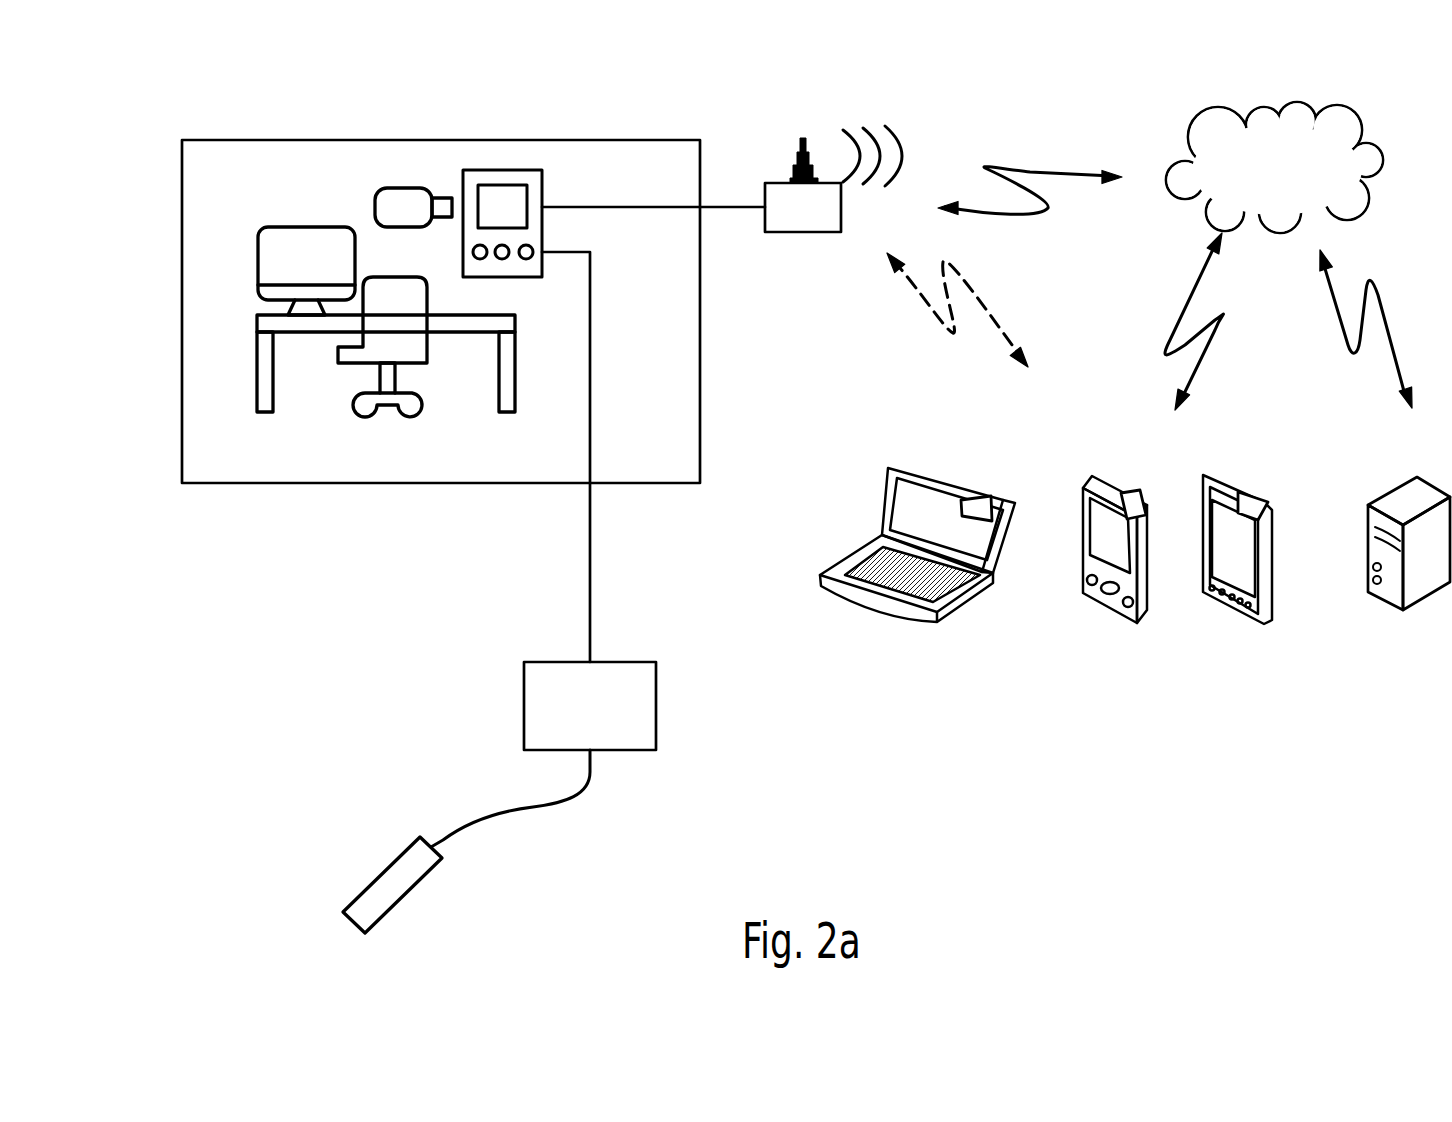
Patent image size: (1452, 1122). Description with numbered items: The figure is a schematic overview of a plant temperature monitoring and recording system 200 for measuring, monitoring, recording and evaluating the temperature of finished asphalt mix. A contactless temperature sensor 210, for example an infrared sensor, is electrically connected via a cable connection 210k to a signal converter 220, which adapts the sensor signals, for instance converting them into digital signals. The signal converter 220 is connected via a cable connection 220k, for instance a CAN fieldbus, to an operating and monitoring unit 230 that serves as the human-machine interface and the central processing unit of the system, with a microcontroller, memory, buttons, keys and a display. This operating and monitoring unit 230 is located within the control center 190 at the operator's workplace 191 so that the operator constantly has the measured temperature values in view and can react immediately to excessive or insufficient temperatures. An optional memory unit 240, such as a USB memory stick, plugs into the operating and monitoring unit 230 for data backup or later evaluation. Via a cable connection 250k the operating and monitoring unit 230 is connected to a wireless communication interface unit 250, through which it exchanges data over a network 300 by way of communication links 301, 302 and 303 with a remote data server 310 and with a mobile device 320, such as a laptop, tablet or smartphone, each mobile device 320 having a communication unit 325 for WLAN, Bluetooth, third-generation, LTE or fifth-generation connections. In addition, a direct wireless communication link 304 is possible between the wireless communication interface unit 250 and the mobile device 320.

The plant temperature monitoring and recording system 200 is at (160, 146).
The control center 190 is at (237, 182).
The operator's workplace 191 is at (202, 290).
The memory unit 240 is at (387, 210).
The operating and monitoring unit 230 is at (465, 185).
The cable connection 250k is at (655, 210).
The wireless communication interface unit 250 is at (805, 210).
The cable connection 220k is at (590, 576).
The signal converter 220 is at (610, 718).
The cable connection 210k is at (534, 808).
The contactless temperature sensor 210 is at (400, 888).
The network 300 is at (1297, 184).
The communication link 301 is at (1045, 170).
The communication link 302 is at (1328, 302).
The communication link 303 is at (1185, 293).
The communication link 304 is at (978, 297).
The mobile device 320 is at (1283, 622).
The communication unit 325 is at (975, 508).
The remote data server 310 is at (1422, 570).